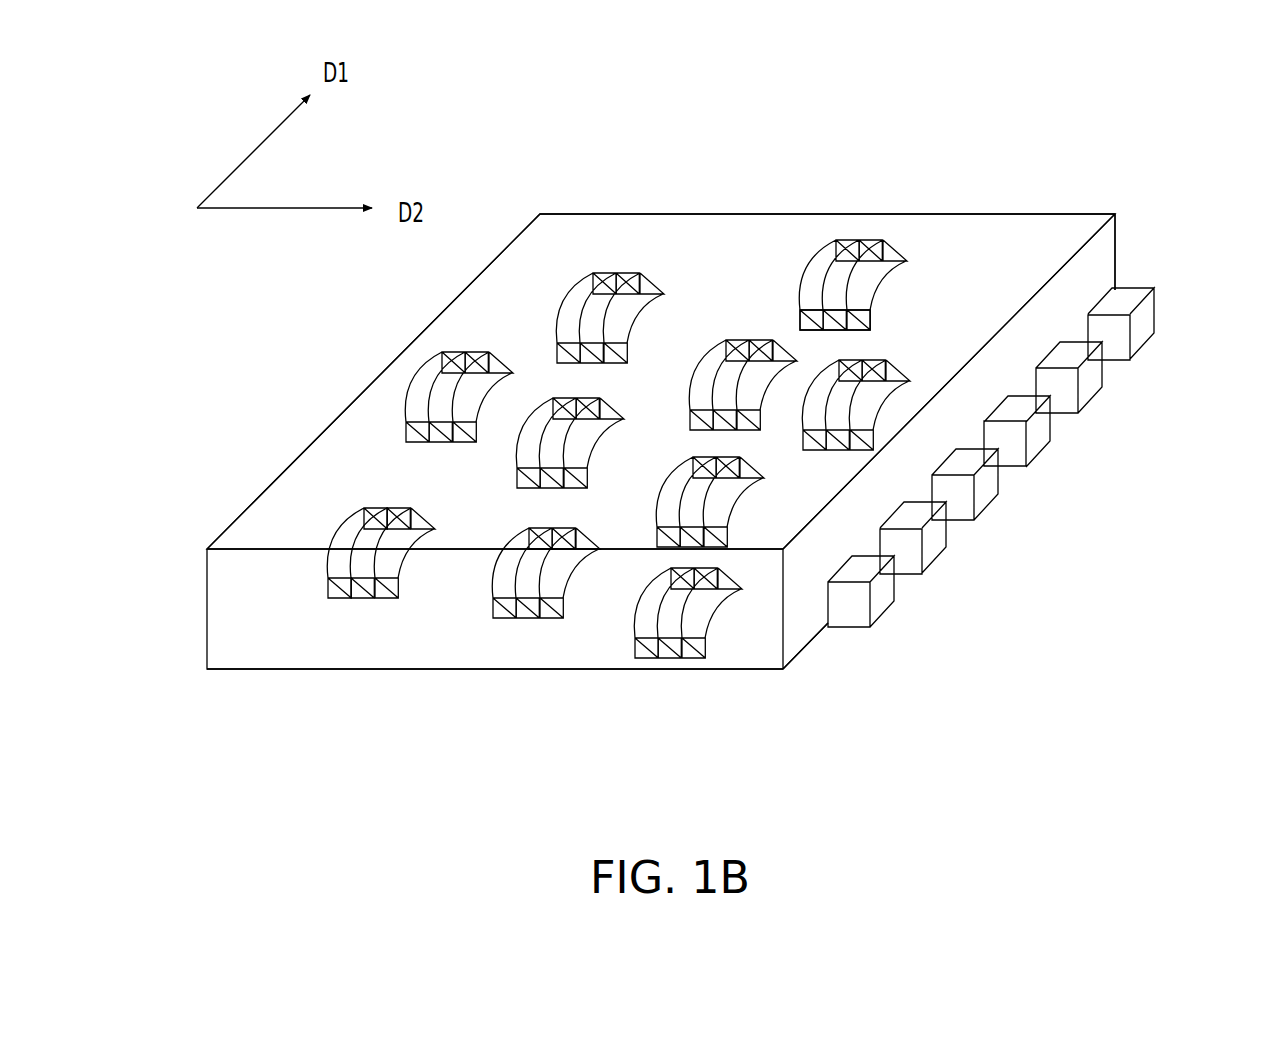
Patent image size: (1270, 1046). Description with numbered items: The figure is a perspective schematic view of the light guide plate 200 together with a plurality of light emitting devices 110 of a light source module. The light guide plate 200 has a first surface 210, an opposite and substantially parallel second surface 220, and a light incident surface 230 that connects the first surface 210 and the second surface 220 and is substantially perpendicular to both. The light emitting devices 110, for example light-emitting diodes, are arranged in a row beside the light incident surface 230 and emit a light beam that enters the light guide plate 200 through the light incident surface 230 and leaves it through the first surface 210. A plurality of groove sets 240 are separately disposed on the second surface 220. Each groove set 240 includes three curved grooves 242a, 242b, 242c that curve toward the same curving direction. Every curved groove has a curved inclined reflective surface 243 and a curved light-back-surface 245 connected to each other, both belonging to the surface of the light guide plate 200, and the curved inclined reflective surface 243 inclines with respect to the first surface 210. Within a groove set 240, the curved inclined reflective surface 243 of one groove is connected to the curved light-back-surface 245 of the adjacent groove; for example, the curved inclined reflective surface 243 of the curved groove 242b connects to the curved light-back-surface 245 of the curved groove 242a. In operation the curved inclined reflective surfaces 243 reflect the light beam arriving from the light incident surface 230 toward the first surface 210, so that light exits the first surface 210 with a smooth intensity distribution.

The light emitting device 110 is at (1145, 332).
The light guide plate 200 is at (1033, 238).
The first surface 210 is at (985, 252).
The second surface 220 is at (540, 676).
The light incident surface 230 is at (1095, 283).
The groove set 240 is at (551, 471).
The curved groove 242a is at (434, 637).
The curved groove 242b is at (362, 594).
The curved groove 242c is at (338, 594).
The curved inclined reflective surface 243 is at (866, 288).
The curved light-back-surface 245 is at (796, 315).